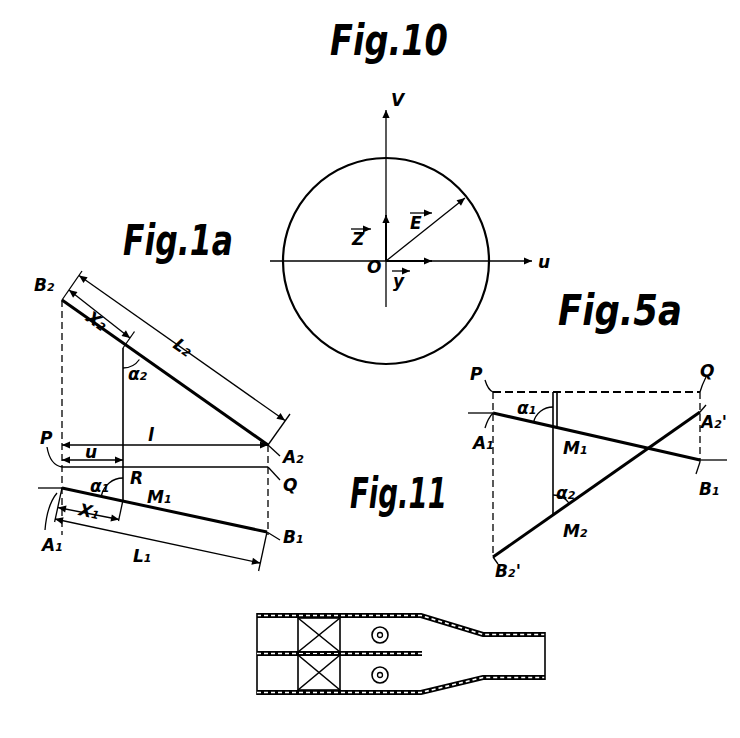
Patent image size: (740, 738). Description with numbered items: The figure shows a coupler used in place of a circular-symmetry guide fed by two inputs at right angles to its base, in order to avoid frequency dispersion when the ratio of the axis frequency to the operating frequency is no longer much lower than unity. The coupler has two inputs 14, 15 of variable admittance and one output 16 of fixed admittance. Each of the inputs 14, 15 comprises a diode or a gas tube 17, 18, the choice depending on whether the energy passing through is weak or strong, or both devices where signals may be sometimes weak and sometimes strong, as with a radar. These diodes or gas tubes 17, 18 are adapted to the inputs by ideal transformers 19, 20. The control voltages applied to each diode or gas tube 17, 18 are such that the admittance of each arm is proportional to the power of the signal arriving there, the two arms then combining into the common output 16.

The input of variable admittance 14 is at (262, 628).
The input of variable admittance 15 is at (262, 672).
The output of fixed admittance 16 is at (533, 652).
The diode or gas tube 17 is at (384, 632).
The diode or gas tube 18 is at (384, 680).
The ideal transformer 19 is at (313, 623).
The ideal transformer 20 is at (313, 685).